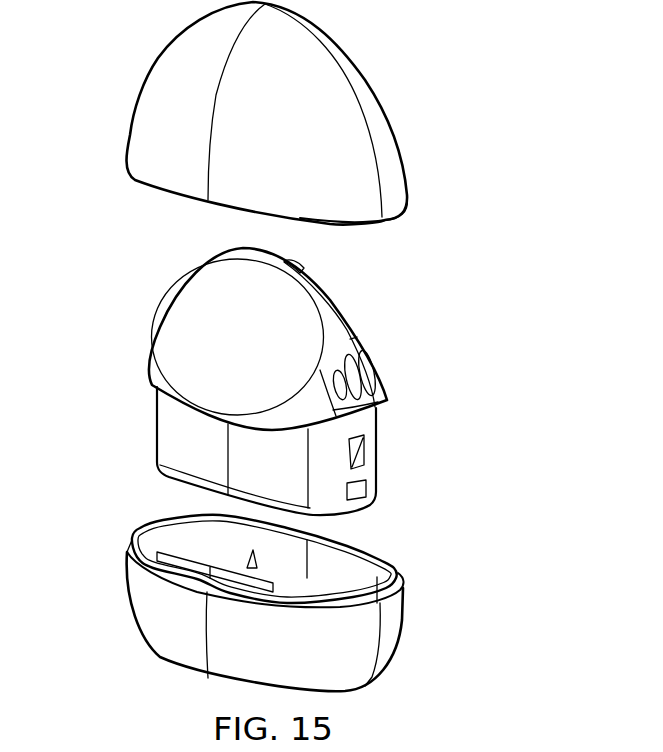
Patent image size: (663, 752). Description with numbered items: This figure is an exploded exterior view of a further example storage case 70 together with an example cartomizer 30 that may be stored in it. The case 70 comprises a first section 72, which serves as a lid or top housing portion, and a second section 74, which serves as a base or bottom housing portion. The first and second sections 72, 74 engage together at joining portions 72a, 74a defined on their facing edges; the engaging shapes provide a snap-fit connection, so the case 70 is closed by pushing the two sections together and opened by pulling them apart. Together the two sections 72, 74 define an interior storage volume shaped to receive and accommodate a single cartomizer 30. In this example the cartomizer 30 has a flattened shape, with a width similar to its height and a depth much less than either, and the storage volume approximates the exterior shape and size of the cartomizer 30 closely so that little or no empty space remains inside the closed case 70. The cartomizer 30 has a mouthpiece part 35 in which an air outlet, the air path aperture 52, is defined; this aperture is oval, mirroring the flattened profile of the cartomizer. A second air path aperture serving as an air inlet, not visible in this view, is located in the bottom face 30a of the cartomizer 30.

The case 70 is at (482, 170).
The first section 72 is at (343, 44).
The joining portion 72a is at (394, 217).
The cartomizer 30 is at (242, 390).
The air path aperture 52 is at (302, 262).
The mouthpiece part 35 is at (353, 340).
The bottom face 30a is at (373, 503).
The second section 74 is at (309, 604).
The joining portion 74a is at (387, 587).